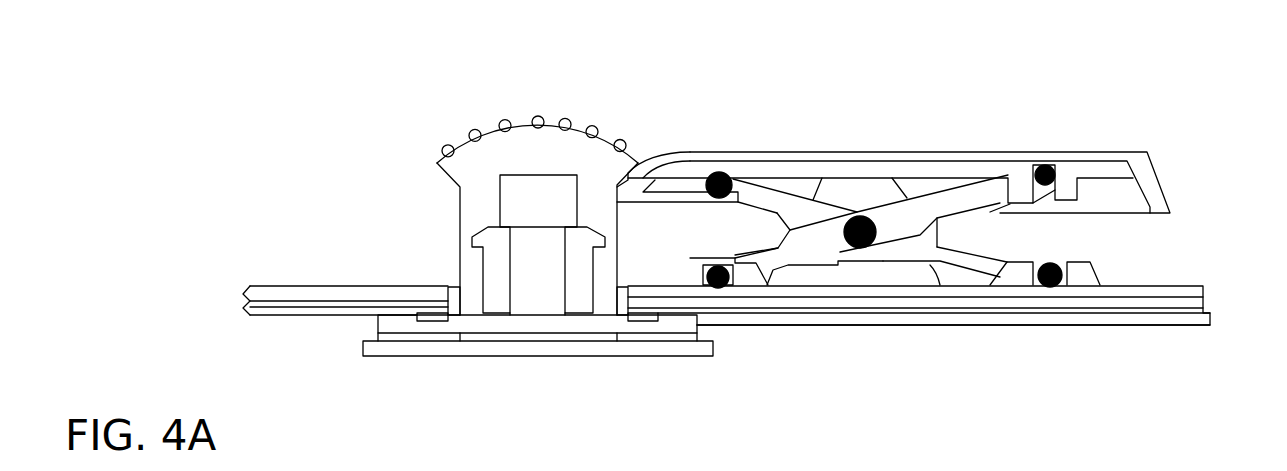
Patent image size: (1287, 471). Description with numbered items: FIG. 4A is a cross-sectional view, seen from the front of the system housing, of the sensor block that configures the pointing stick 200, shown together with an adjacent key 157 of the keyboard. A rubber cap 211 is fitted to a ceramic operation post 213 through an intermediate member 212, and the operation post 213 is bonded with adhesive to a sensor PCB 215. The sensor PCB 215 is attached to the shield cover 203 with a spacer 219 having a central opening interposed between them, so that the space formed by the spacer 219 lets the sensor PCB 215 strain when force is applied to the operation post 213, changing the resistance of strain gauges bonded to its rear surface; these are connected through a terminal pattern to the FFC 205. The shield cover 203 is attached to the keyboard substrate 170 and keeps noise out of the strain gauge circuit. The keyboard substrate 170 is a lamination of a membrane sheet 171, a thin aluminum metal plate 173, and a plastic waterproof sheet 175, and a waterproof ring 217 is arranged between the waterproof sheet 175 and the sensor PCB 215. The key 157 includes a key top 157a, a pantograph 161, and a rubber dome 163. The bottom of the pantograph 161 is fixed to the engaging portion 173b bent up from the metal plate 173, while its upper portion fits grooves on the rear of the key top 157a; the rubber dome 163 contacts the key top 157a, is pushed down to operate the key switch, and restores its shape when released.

The key 157 is at (893, 163).
The key top 157a is at (722, 152).
The pantograph 161 is at (932, 208).
The rubber dome 163 is at (851, 178).
The keyboard substrate 170 is at (723, 262).
The membrane sheet 171 is at (362, 292).
The metal plate 173 is at (319, 306).
The engaging portion 173b is at (1029, 262).
The waterproof sheet 175 is at (271, 300).
The pointing stick 200 is at (536, 213).
The shield cover 203 is at (563, 347).
The FFC 205 is at (1001, 326).
The rubber cap 211 is at (553, 123).
The intermediate member 212 is at (580, 224).
The operation post 213 is at (533, 224).
The sensor PCB 215 is at (525, 323).
The waterproof ring 217 is at (645, 313).
The spacer 219 is at (395, 338).